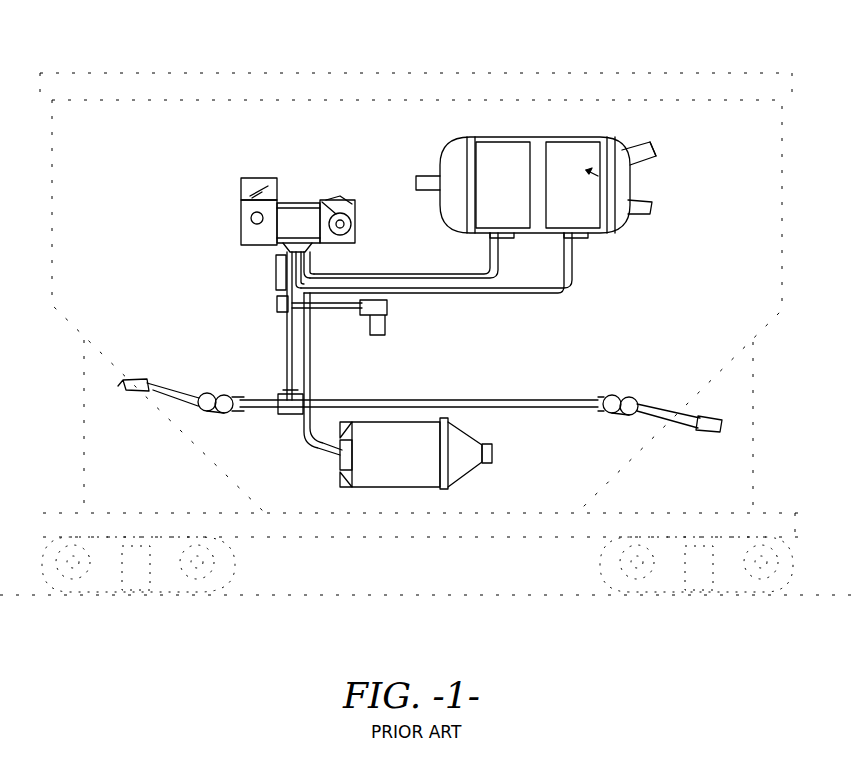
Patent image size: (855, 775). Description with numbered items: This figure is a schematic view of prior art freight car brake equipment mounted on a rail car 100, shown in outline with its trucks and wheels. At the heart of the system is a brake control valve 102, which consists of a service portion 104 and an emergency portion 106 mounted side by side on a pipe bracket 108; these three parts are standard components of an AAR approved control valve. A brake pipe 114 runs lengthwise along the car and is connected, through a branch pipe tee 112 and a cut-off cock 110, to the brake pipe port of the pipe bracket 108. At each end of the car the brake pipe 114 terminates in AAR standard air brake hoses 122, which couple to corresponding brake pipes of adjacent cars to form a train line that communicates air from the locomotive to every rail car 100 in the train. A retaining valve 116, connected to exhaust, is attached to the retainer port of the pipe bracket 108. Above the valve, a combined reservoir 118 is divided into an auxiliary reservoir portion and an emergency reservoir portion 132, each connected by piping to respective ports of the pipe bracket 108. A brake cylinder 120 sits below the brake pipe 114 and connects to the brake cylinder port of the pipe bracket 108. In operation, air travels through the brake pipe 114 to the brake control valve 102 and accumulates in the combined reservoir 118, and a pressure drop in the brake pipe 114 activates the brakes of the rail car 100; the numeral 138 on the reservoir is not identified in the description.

The rail car 100 is at (58, 305).
The brake control valve 102 is at (268, 216).
The service portion 104 is at (249, 243).
The emergency portion 106 is at (335, 196).
The pipe bracket 108 is at (325, 243).
The cut-off cock 110 is at (283, 300).
The branch pipe tee 112 is at (284, 395).
The brake pipe 114 is at (440, 400).
The retaining valve 116 is at (388, 335).
The combined reservoir 118 is at (626, 228).
The brake cylinder 120 is at (463, 470).
The air brake hoses 122 is at (181, 388).
The emergency reservoir portion 132 is at (628, 166).
The air reservoir 138 is at (488, 166).